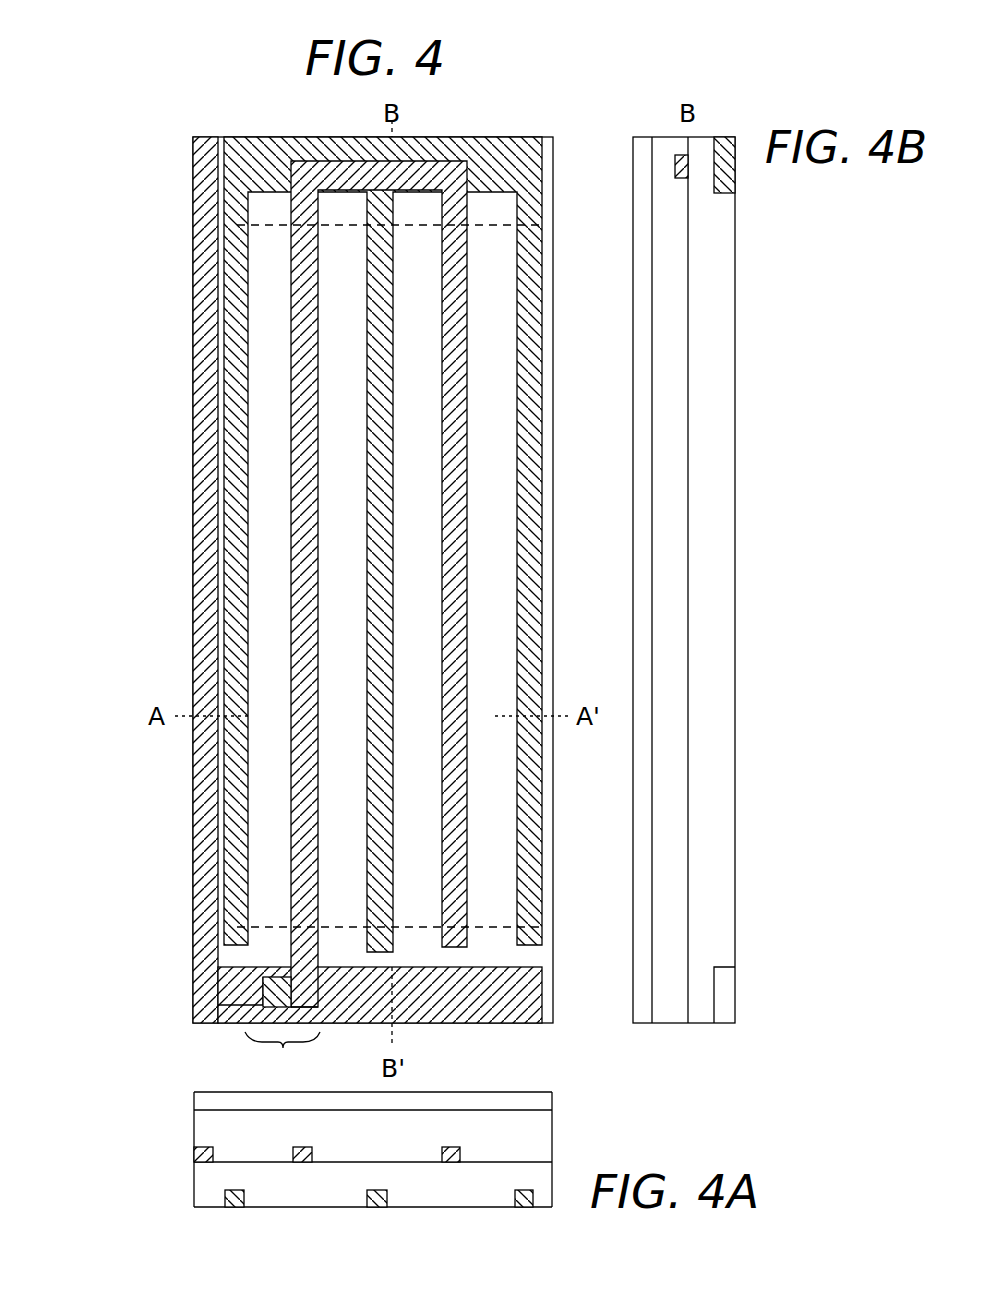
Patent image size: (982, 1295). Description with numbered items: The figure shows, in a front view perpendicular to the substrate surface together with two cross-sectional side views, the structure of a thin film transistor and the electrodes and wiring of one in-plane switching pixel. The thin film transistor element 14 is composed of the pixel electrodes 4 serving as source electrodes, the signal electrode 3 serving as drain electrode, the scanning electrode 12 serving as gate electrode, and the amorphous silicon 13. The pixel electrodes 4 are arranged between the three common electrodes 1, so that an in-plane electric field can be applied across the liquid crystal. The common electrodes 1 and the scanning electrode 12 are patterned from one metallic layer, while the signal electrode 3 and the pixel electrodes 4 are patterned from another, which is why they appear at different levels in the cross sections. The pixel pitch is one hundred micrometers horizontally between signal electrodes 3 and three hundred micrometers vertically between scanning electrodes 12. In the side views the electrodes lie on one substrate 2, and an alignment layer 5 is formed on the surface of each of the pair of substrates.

In FIG. 4, the common electrode 1 is at (233, 190).
In FIG. 4A, the common electrode 1 is at (235, 1207).
In FIG. 4B, the lower substrate 2 is at (710, 545).
In FIG. 4A, the lower substrate 2 is at (322, 1195).
In FIG. 4, the signal electrode 3 is at (200, 340).
In FIG. 4A, the signal electrode 3 is at (200, 1147).
In FIG. 4, the pixel electrode 4 is at (303, 540).
In FIG. 4A, the pixel electrode 4 is at (313, 1157).
In FIG. 4B, the alignment layer 5 is at (645, 383).
In FIG. 4A, the alignment layer 5 is at (540, 1102).
In FIG. 4, the scanning electrode 12 is at (542, 983).
In FIG. 4, the amorphous silicon 13 is at (263, 997).
In FIG. 4, the thin film transistor element 14 is at (282, 1054).